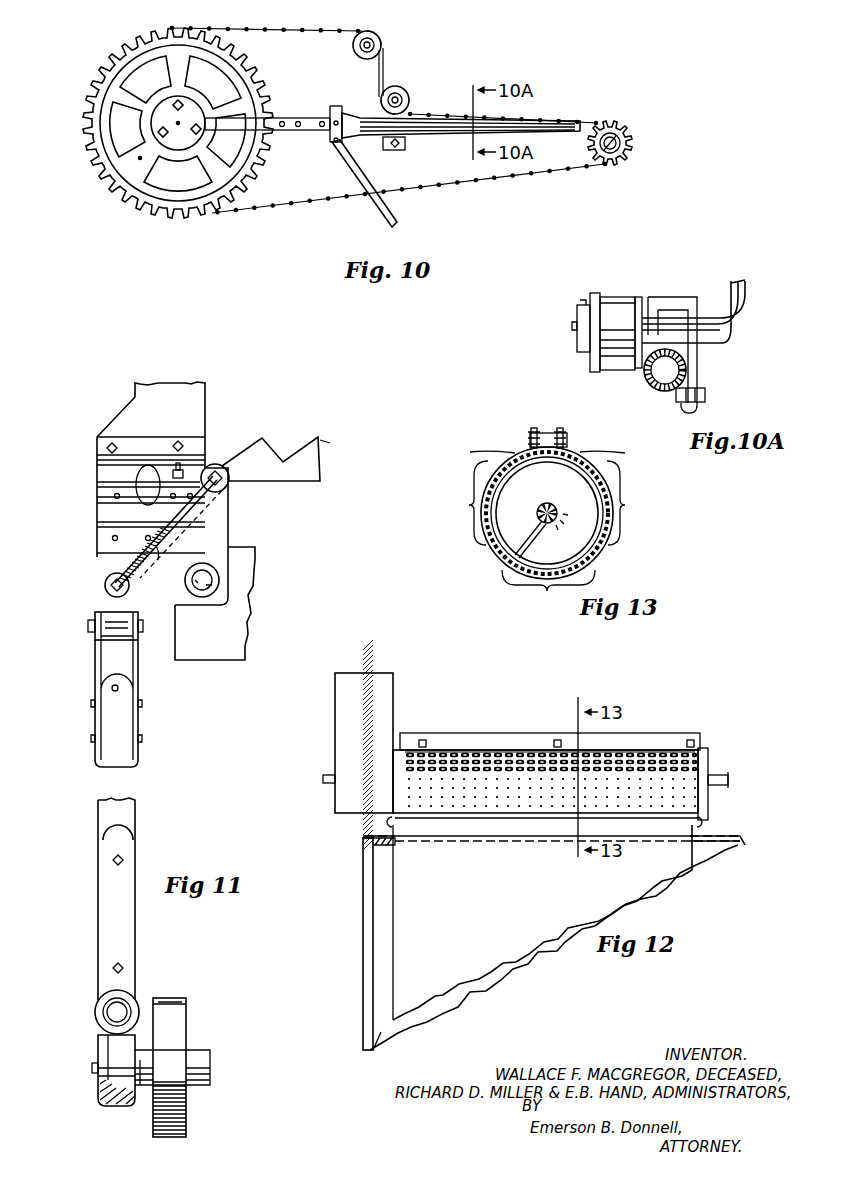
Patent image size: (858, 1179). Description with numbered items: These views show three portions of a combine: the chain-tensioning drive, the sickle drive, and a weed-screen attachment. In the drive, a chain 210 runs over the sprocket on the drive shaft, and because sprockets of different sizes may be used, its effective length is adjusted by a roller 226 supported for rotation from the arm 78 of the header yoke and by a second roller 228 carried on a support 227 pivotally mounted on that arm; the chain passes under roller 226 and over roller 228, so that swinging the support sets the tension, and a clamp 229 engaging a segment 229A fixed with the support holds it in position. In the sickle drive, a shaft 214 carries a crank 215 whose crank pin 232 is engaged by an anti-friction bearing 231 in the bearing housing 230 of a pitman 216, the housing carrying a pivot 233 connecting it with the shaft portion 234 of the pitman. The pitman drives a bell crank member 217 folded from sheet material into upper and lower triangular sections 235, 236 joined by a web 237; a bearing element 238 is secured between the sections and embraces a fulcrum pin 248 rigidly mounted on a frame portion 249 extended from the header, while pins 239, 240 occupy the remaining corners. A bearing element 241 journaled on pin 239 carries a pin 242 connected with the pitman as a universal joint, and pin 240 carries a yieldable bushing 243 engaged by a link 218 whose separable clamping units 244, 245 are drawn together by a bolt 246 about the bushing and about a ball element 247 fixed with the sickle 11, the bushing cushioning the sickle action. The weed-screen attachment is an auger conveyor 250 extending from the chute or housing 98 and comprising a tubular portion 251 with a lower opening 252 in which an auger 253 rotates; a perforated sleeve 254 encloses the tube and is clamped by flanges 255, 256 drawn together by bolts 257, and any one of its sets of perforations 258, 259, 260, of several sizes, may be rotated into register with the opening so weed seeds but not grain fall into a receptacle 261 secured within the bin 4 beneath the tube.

In FIG. 12, the grain container or bin 4 is at (544, 949).
In FIG. 11, the sickle 11 is at (322, 462).
In FIG. 10, the arm 78 is at (439, 137).
In FIG. 10A, the arm 78 is at (645, 388).
In FIG. 12, the chute or housing 98 is at (340, 700).
In FIG. 11, the chute or housing 98 is at (312, 705).
In FIG. 10, the chain 210 is at (596, 120).
In FIG. 11, the shaft 214 is at (210, 1082).
In FIG. 11, the crank 215 is at (176, 1000).
In FIG. 11, the pitman 216 is at (135, 818).
In FIG. 11, the bell crank member 217 is at (168, 554).
In FIG. 11, the link 218 is at (149, 445).
In FIG. 10, the roller 226 is at (410, 97).
In FIG. 10A, the roller 226 is at (615, 300).
In FIG. 10, the support 227 is at (372, 68).
In FIG. 10A, the support 227 is at (742, 298).
In FIG. 10, the roller 228 is at (381, 38).
In FIG. 10, the clamp 229 is at (388, 151).
In FIG. 10A, the clamp 229 is at (704, 392).
In FIG. 10A, the segment 229A is at (700, 356).
In FIG. 11, the bearing housing 230 is at (98, 1050).
In FIG. 11, the anti-friction bearing 231 is at (100, 1094).
In FIG. 11, the crank pin 232 is at (150, 1087).
In FIG. 11, the pivot 233 is at (105, 1016).
In FIG. 11, the shaft portion 234 is at (102, 910).
In FIG. 11, the upper triangular section 235 is at (222, 495).
In FIG. 11, the lower triangular section 236 is at (180, 545).
In FIG. 11, the web 237 is at (200, 525).
In FIG. 11, the bearing element 238 is at (220, 572).
In FIG. 11, the pin 239 is at (105, 580).
In FIG. 11, the pin 240 is at (272, 452).
In FIG. 11, the bearing element 241 is at (100, 613).
In FIG. 11, the pin 242 is at (88, 625).
In FIG. 11, the bushing 243 is at (228, 465).
In FIG. 11, the clamping unit 244 is at (128, 468).
In FIG. 11, the clamping unit 245 is at (108, 500).
In FIG. 11, the bolt 246 is at (182, 465).
In FIG. 11, the ball element 247 is at (110, 486).
In FIG. 11, the fulcrum pin 248 is at (212, 586).
In FIG. 11, the frame portion 249 is at (248, 602).
In FIG. 13, the auger conveyor 250 is at (547, 513).
In FIG. 12, the auger conveyor 250 is at (538, 696).
In FIG. 13, the tubular portion 251 is at (625, 453).
In FIG. 13, the lower opening 252 is at (498, 556).
In FIG. 13, the auger 253 is at (577, 530).
In FIG. 13, the perforated sleeve or shroud 254 is at (470, 452).
In FIG. 12, the perforated sleeve or shroud 254 is at (612, 752).
In FIG. 13, the flange 255 is at (530, 432).
In FIG. 13, the flange 256 is at (566, 432).
In FIG. 13, the bolt 257 is at (548, 430).
In FIG. 12, the bolt 257 is at (559, 740).
In FIG. 13, the set of perforations 258 is at (462, 503).
In FIG. 13, the set of perforations 259 is at (548, 590).
In FIG. 13, the set of perforations 260 is at (634, 503).
In FIG. 12, the set of perforations 260 is at (640, 758).
In FIG. 12, the receptacle 261 is at (402, 868).